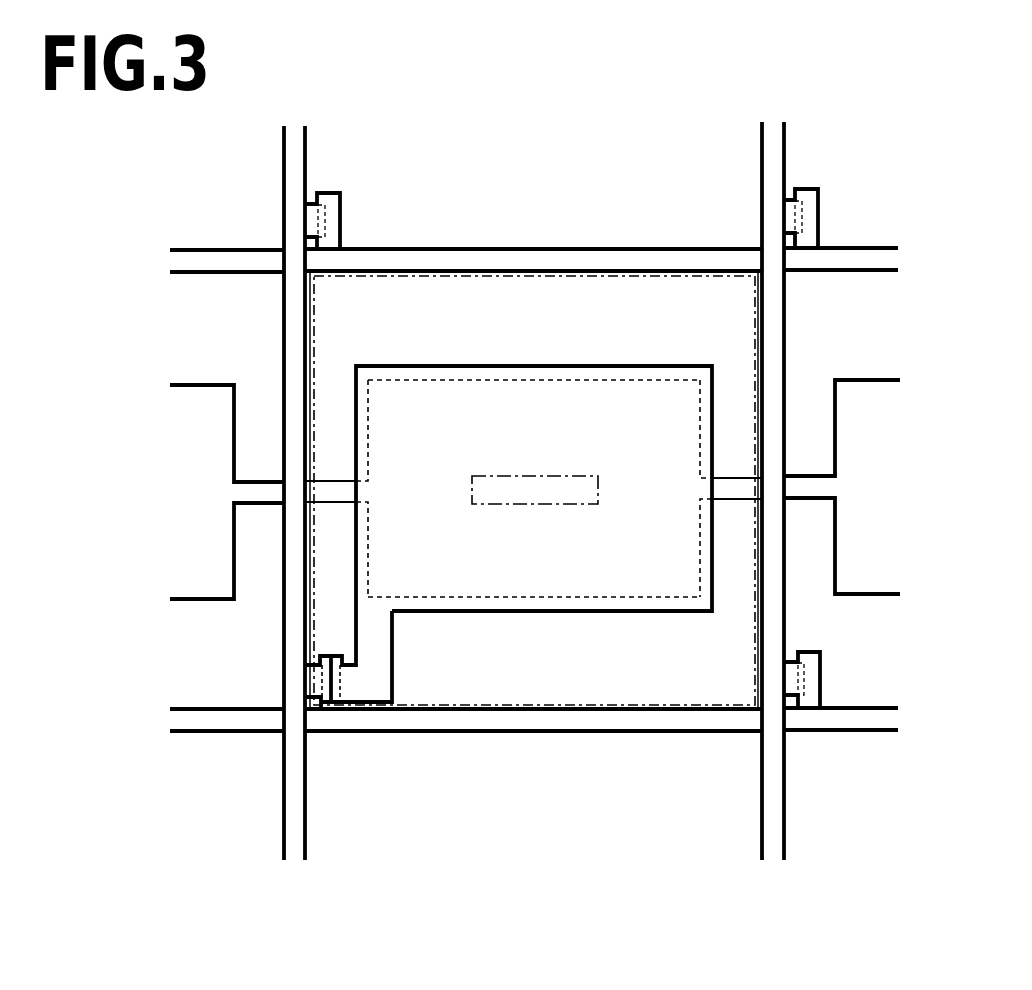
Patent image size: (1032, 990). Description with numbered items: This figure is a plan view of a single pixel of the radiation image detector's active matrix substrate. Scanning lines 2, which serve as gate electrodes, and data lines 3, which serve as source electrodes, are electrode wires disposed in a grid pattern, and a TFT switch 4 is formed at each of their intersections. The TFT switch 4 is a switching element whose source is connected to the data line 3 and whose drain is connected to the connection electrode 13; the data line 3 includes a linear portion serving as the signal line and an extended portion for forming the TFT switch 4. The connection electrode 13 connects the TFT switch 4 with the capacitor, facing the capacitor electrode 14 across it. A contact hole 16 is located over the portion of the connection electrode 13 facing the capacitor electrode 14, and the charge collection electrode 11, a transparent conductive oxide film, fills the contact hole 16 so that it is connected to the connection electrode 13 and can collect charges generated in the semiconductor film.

The scanning line 2 is at (865, 253).
The data line 3 is at (290, 156).
The TFT switch 4 is at (332, 722).
The charge collection electrode 11 is at (500, 273).
The connection electrode 13 is at (643, 612).
The capacitor electrode 14 is at (577, 378).
The contact hole 16 is at (573, 505).